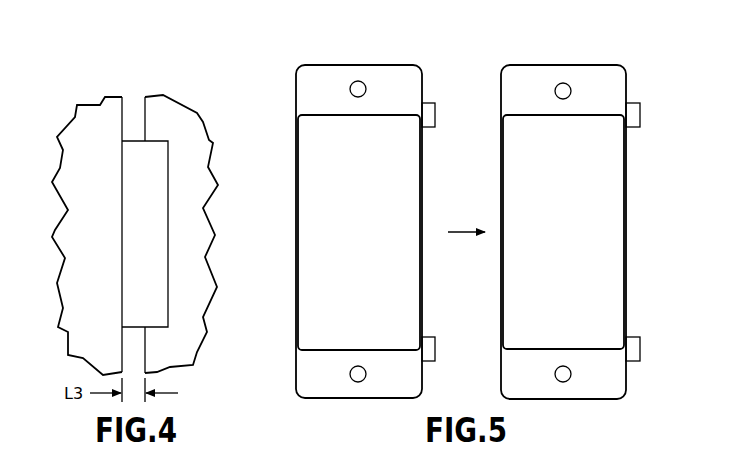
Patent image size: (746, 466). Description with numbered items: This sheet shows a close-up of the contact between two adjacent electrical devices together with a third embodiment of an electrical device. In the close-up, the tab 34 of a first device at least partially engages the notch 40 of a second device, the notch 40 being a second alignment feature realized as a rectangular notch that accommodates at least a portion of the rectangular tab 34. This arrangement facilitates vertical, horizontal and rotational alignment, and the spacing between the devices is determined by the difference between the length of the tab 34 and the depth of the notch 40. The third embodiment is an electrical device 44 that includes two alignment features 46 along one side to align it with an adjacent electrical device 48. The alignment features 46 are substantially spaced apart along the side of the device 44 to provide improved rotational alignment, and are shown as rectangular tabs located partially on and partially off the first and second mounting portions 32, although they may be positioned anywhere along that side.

In FIG. 5, the mounting portion 32 is at (359, 73).
In FIG. 4, the tab 34 is at (136, 231).
In FIG. 4, the second alignment feature 40 is at (168, 311).
In FIG. 5, the electrical device 44 is at (284, 71).
In FIG. 5, the alignment feature 46 is at (436, 113).
In FIG. 5, the adjacent electrical device 48 is at (636, 71).